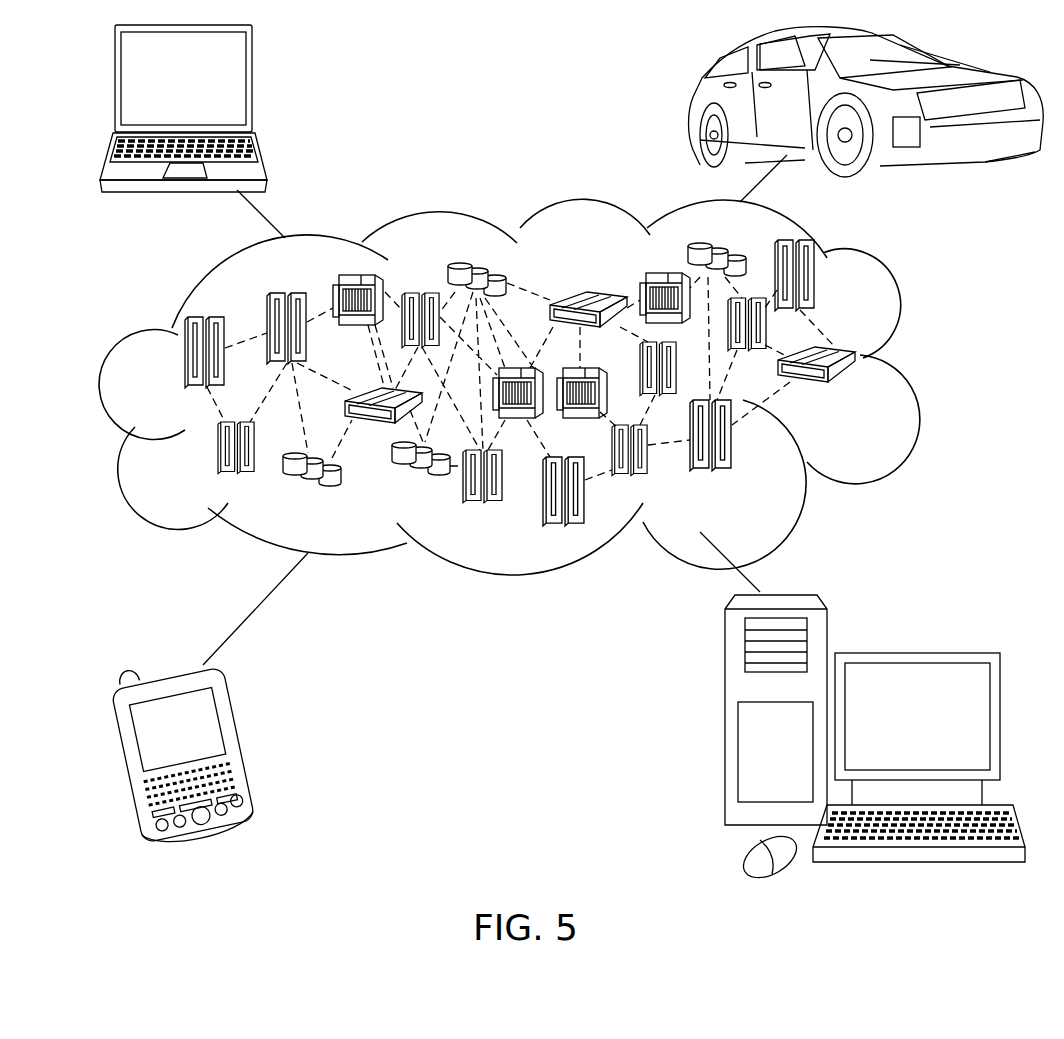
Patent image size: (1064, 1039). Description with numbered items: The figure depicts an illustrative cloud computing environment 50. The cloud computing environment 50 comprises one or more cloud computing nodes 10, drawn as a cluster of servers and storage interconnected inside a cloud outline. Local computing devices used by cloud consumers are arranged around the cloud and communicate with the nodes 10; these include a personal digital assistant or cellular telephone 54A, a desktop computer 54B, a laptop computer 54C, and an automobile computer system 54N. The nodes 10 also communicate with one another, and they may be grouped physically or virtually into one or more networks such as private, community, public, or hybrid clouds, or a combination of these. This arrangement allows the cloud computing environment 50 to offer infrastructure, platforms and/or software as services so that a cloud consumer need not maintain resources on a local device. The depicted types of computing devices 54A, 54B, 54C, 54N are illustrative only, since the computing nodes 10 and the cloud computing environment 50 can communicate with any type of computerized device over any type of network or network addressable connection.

The cloud computing node 10 is at (857, 393).
The cloud computing environment 50 is at (915, 361).
The personal digital assistant or cellular telephone 54A is at (243, 747).
The desktop computer 54B is at (913, 652).
The laptop computer 54C is at (253, 87).
The automobile computer system 54N is at (693, 102).